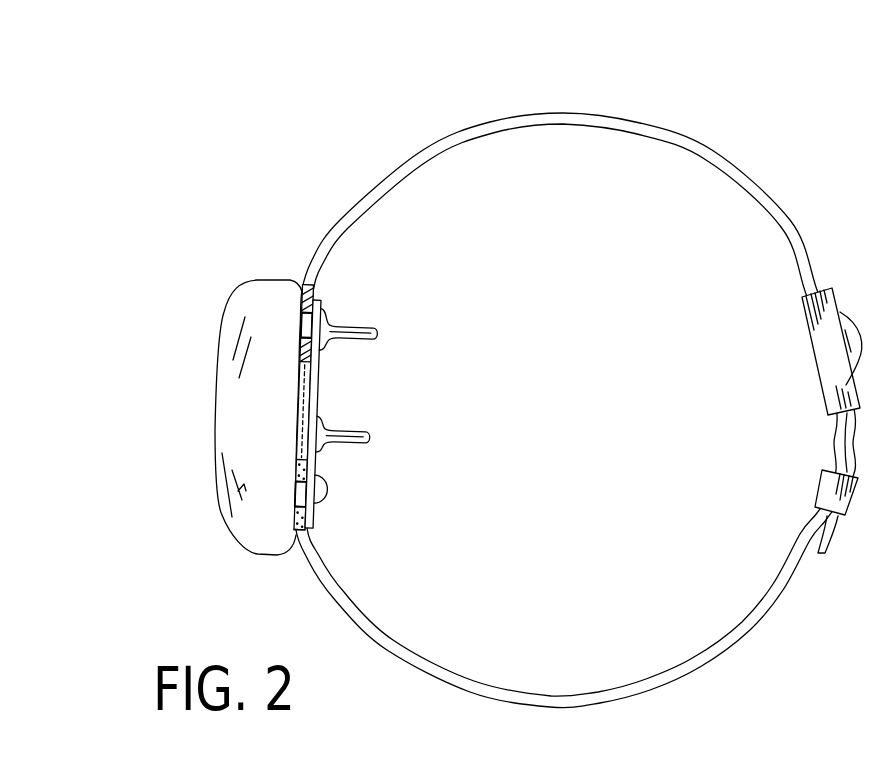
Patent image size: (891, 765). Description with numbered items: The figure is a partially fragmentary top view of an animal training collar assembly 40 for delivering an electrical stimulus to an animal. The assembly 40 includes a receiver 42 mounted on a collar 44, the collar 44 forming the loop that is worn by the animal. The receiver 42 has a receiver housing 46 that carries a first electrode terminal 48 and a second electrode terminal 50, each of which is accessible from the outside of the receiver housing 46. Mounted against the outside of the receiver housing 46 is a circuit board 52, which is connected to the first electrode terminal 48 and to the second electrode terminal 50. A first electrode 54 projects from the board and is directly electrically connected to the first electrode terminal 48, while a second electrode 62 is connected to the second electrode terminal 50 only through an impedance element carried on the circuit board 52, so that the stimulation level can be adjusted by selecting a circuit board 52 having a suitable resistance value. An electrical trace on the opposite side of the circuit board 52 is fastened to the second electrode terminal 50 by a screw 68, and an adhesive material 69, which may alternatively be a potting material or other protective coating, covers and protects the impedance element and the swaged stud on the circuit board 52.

The animal training collar assembly 40 is at (506, 375).
The receiver 42 is at (302, 386).
The collar 44 is at (456, 128).
The receiver housing 46 is at (255, 412).
The first electrode terminal 48 is at (302, 298).
The second electrode terminal 50 is at (298, 498).
The circuit board 52 is at (322, 363).
The first electrode 54 is at (373, 323).
The second electrode 62 is at (355, 430).
The screw 68 is at (323, 500).
The adhesive material 69 is at (312, 448).